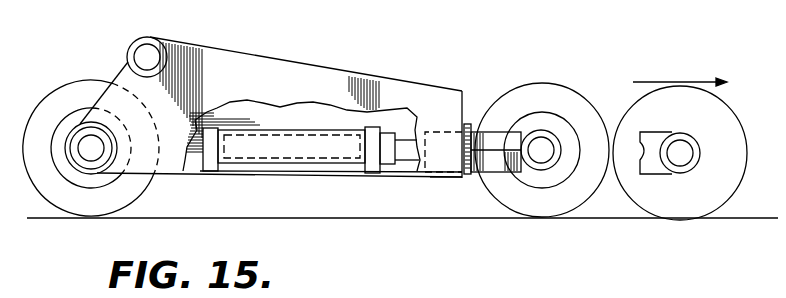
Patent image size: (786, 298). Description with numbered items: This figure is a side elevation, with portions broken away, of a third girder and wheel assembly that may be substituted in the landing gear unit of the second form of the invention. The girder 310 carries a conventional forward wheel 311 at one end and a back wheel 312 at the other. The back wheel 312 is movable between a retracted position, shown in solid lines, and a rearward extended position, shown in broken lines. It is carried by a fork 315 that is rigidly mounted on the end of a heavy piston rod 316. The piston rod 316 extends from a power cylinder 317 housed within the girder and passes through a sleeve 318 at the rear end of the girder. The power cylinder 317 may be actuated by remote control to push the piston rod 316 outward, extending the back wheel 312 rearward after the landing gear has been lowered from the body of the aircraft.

The girder 310 is at (351, 68).
The forward wheel 311 is at (72, 80).
The back wheel 312 is at (576, 94).
The fork 315 is at (490, 130).
The piston rod 316 is at (403, 140).
The power cylinder 317 is at (284, 134).
The sleeve 318 is at (446, 178).